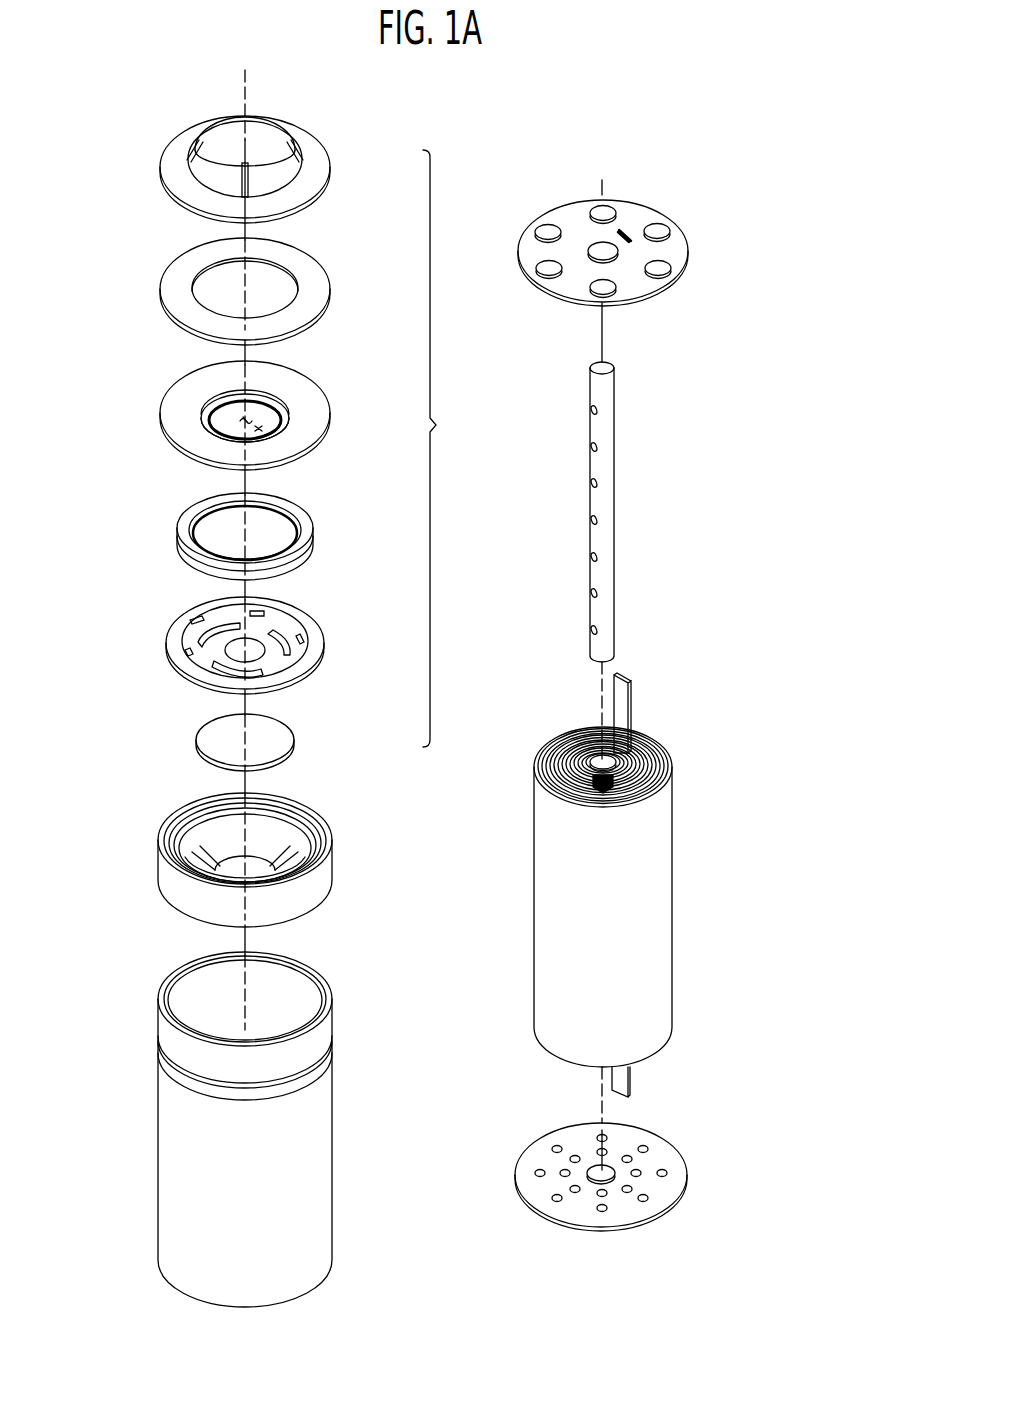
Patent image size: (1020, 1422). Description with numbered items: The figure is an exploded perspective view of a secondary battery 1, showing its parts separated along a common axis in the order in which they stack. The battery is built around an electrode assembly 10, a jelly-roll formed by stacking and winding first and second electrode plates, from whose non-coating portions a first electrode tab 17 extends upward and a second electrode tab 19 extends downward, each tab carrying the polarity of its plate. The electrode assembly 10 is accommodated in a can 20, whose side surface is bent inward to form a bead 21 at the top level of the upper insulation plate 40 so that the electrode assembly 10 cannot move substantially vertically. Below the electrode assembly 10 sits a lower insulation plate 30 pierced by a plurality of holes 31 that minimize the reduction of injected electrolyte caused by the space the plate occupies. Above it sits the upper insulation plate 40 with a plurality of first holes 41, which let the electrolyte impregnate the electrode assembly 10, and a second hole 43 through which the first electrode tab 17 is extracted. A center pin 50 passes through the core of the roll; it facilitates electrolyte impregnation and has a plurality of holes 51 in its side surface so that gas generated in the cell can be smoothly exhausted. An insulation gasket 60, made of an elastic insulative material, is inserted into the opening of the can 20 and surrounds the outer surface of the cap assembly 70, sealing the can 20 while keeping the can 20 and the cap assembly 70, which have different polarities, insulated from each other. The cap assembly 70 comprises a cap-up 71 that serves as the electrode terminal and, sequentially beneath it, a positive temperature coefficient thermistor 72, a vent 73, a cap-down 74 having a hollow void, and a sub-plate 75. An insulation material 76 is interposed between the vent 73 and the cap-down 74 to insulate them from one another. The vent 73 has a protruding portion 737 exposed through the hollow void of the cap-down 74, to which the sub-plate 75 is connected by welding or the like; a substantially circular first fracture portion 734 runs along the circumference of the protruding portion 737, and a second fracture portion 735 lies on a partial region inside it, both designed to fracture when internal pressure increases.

The secondary battery 1 is at (105, 173).
The electrode assembly 10 is at (672, 893).
The first electrode tab 17 is at (627, 703).
The second electrode tab 19 is at (633, 1078).
The can 20 is at (282, 1129).
The bead 21 is at (327, 1060).
The lower insulation plate 30 is at (640, 1177).
The holes 31 is at (645, 1197).
The upper insulation plate 40 is at (650, 229).
The first holes 41 is at (660, 228).
The second hole 43 is at (626, 236).
The center pin 50 is at (650, 512).
The holes 51 is at (597, 447).
The insulation gasket 60 is at (325, 875).
The cap assembly 70 is at (444, 448).
The cap-up 71 is at (327, 165).
The positive temperature coefficient thermistor 72 is at (327, 287).
The vent 73 is at (289, 411).
The first fracture portion 734 is at (287, 400).
The second fracture portion 735 is at (262, 428).
The protruding portion 737 is at (250, 422).
The cap-down 74 is at (318, 632).
The sub-plate 75 is at (285, 735).
The insulation material 76 is at (312, 532).